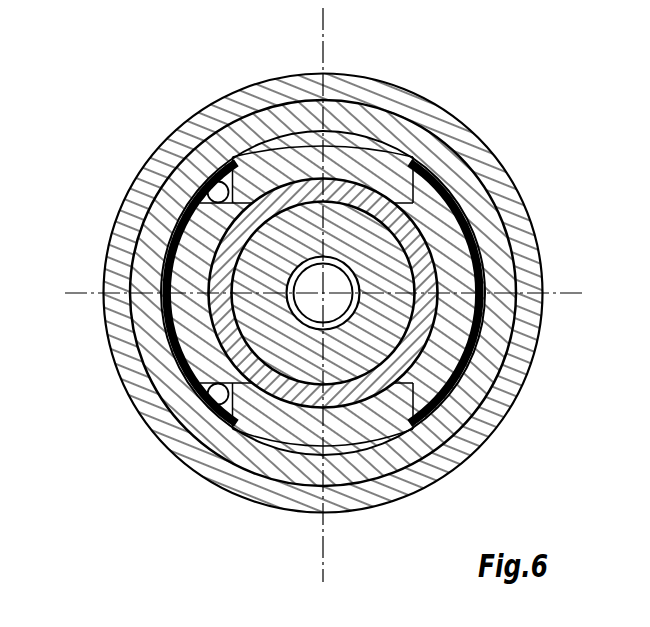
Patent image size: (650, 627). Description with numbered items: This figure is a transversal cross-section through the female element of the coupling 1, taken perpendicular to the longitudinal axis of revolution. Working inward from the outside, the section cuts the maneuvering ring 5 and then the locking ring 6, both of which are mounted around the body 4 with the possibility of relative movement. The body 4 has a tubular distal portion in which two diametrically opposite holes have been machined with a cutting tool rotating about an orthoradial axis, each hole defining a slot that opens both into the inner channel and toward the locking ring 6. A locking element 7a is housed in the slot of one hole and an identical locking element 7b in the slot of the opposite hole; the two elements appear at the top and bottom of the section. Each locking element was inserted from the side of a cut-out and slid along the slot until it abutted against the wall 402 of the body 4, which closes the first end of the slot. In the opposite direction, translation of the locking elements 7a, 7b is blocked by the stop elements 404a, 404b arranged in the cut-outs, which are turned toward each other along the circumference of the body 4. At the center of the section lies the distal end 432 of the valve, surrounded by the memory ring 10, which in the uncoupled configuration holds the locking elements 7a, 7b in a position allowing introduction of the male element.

The coupling 1 is at (475, 118).
The body 4 is at (458, 317).
The maneuvering ring 5 is at (497, 174).
The locking ring 6 is at (497, 257).
The locking element 7a is at (342, 162).
The locking element 7b is at (268, 413).
The memory ring 10 is at (407, 353).
The wall 402 is at (403, 180).
The stop element 404a is at (216, 190).
The stop element 404b is at (218, 395).
The distal end of the valve 432 is at (258, 325).